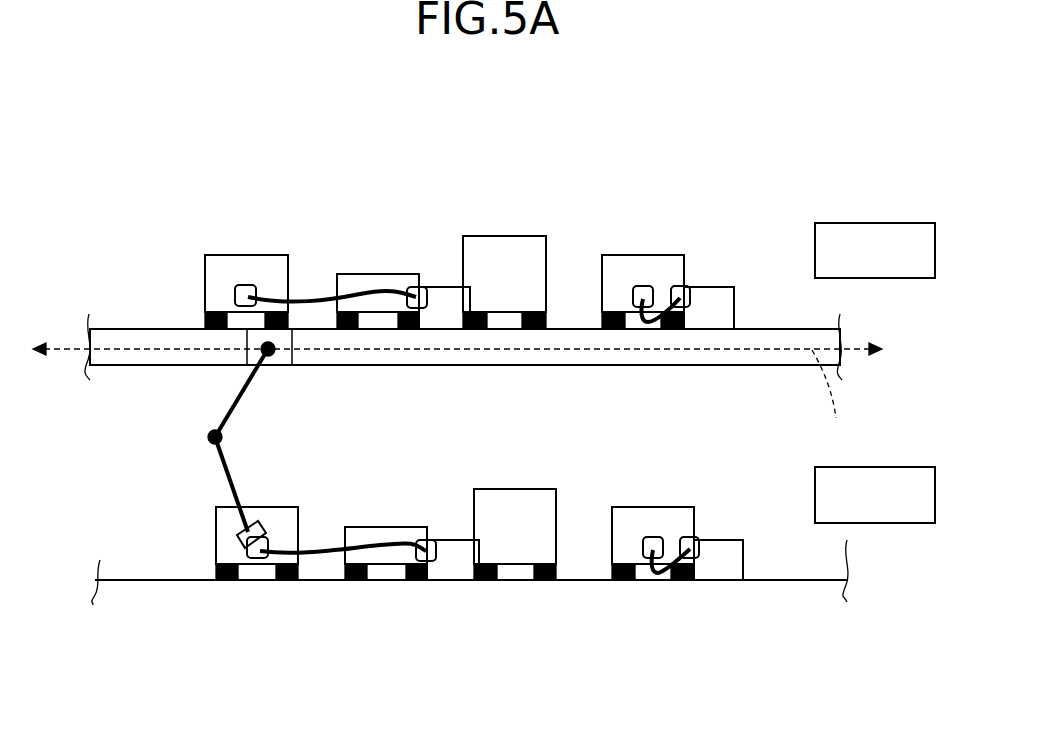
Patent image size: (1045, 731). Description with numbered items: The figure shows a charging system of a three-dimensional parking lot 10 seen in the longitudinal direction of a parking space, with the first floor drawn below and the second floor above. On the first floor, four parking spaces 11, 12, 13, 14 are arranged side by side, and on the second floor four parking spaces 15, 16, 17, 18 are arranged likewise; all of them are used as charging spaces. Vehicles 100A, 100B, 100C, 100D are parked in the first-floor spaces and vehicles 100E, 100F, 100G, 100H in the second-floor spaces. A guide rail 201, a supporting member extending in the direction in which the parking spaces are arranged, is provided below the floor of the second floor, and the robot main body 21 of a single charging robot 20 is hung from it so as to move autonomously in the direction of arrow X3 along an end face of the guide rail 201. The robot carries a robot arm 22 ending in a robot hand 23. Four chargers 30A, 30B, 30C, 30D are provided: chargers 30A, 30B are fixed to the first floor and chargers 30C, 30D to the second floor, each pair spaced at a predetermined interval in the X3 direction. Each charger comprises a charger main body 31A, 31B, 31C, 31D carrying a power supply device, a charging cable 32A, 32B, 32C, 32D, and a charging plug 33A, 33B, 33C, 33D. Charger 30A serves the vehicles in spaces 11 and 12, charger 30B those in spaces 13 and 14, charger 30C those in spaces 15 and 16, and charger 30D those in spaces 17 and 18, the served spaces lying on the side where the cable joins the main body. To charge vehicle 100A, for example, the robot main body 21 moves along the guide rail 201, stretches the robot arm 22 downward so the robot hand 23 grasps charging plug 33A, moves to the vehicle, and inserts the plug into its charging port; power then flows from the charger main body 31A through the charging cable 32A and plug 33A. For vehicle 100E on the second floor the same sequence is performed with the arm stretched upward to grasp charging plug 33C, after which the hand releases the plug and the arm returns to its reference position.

The parking lot 10 is at (128, 118).
The parking space 11 is at (243, 600).
The parking space 12 is at (373, 604).
The parking space 13 is at (507, 602).
The parking space 14 is at (659, 600).
The parking space 15 is at (254, 148).
The parking space 16 is at (368, 148).
The parking space 17 is at (505, 150).
The parking space 18 is at (624, 146).
The charging robot 20 is at (184, 412).
The robot main body 21 is at (277, 366).
The robot arm 22 is at (226, 484).
The robot hand 23 is at (237, 532).
The charger 30A is at (445, 513).
The charger 30B is at (732, 516).
The charger 30C is at (443, 275).
The charger 30D is at (731, 252).
The charger main body 31A is at (455, 581).
The charger main body 31B is at (743, 560).
The charger main body 31C is at (440, 313).
The charger main body 31D is at (735, 302).
The charging cable 32A is at (332, 548).
The charging cable 32B is at (650, 587).
The charging cable 32C is at (312, 295).
The charging cable 32D is at (640, 318).
The charging plug 33A is at (247, 552).
The charging plug 33B is at (650, 537).
The charging plug 33C is at (237, 292).
The charging plug 33D is at (641, 287).
The vehicle 100A is at (293, 507).
The vehicle 100B is at (383, 527).
The vehicle 100C is at (504, 489).
The vehicle 100D is at (648, 507).
The vehicle 100E is at (247, 255).
The vehicle 100F is at (378, 274).
The vehicle 100G is at (500, 236).
The vehicle 100H is at (655, 255).
The guide rail 201 is at (727, 357).
The arrow X3 is at (834, 398).